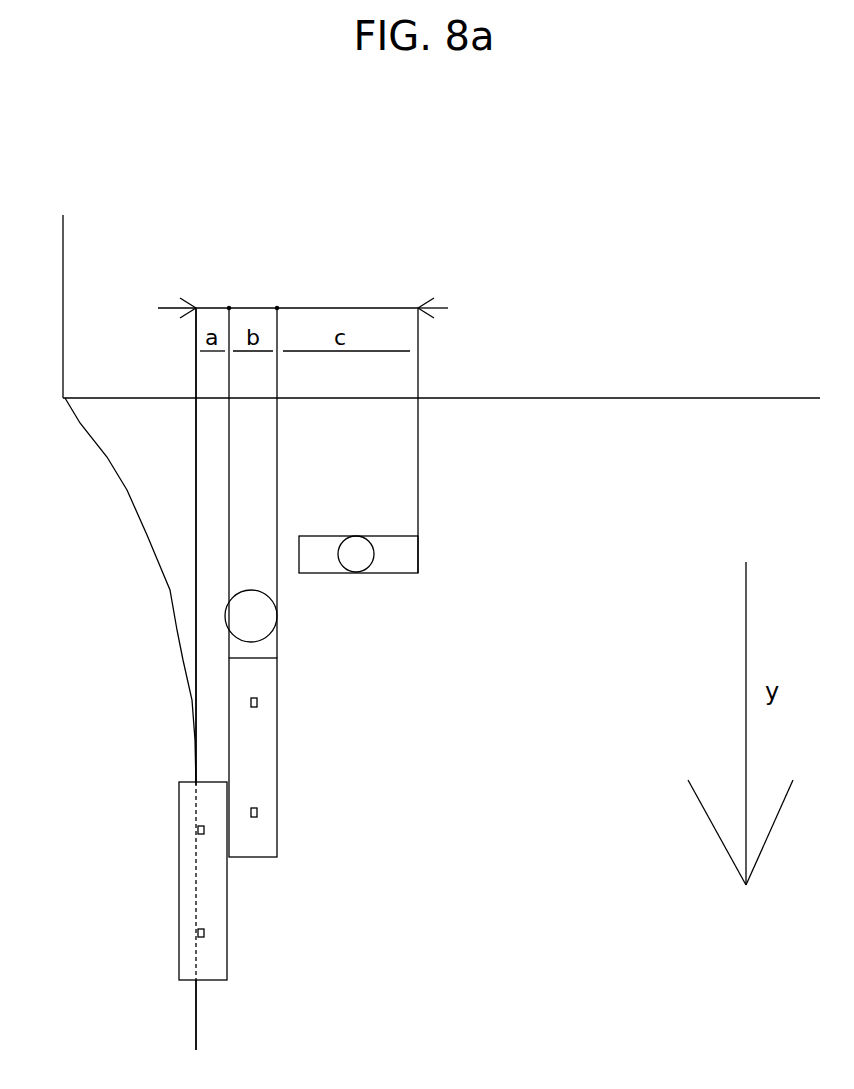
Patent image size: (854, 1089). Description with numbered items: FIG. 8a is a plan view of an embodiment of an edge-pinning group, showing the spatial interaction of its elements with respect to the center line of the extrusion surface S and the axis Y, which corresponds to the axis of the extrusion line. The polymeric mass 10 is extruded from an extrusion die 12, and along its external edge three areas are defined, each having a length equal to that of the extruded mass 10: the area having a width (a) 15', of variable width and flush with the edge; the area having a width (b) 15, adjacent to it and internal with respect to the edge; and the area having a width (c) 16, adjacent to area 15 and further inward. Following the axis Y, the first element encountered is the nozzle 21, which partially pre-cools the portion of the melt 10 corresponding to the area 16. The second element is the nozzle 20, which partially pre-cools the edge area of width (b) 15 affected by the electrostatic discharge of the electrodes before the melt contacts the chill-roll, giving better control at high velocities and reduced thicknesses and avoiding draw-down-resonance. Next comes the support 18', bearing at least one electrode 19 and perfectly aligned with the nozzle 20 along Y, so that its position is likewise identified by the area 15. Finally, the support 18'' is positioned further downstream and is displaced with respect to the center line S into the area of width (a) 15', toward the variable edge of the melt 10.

The polymeric mass 10 is at (180, 537).
The extrusion die 12 is at (652, 332).
The area having a width (a) 15' is at (164, 630).
The area having a width (b) 15 is at (253, 434).
The area having a width (c) 16 is at (343, 305).
The support 18' is at (179, 757).
The support 18'' is at (127, 881).
The electrode 19 is at (196, 932).
The nozzle 20 is at (279, 617).
The nozzle 21 is at (376, 547).